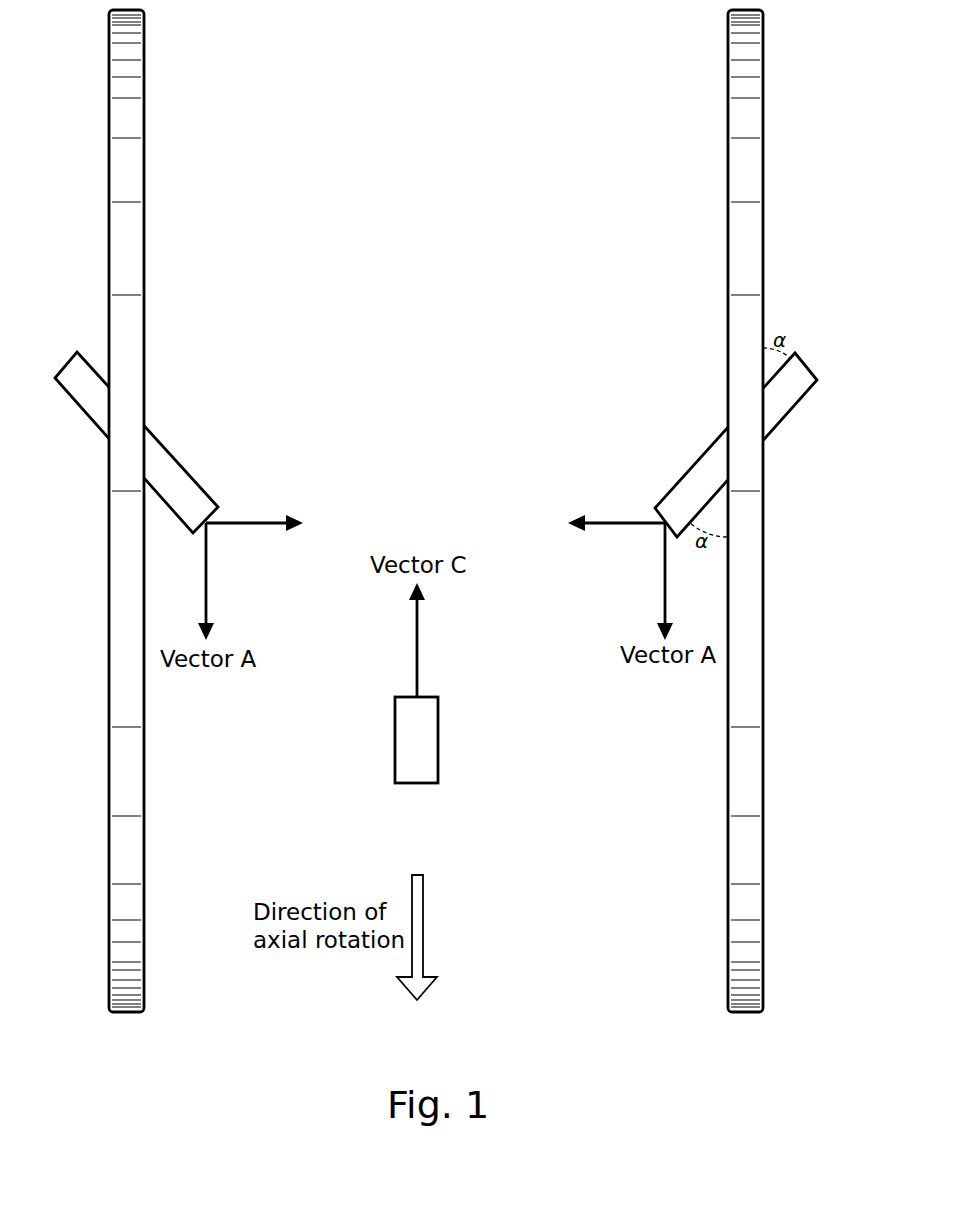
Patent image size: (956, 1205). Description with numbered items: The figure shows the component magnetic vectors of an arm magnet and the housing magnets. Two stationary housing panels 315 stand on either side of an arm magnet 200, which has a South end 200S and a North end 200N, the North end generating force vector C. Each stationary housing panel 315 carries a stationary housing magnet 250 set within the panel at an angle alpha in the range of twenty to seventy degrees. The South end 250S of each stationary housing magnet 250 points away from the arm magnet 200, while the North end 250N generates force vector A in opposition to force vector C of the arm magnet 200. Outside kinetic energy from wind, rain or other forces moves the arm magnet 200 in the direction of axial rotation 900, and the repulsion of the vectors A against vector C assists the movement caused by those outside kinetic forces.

The stationary housing panel 315 is at (144, 120).
The stationary housing magnet 250 is at (156, 434).
The South end of stationary housing magnet 250S is at (62, 360).
The North end of stationary housing magnet 250N is at (195, 479).
The arm magnet 200 is at (438, 740).
The North end of arm magnet 200N is at (428, 697).
The South end of arm magnet 200S is at (418, 786).
The direction of axial rotation 900 is at (423, 927).